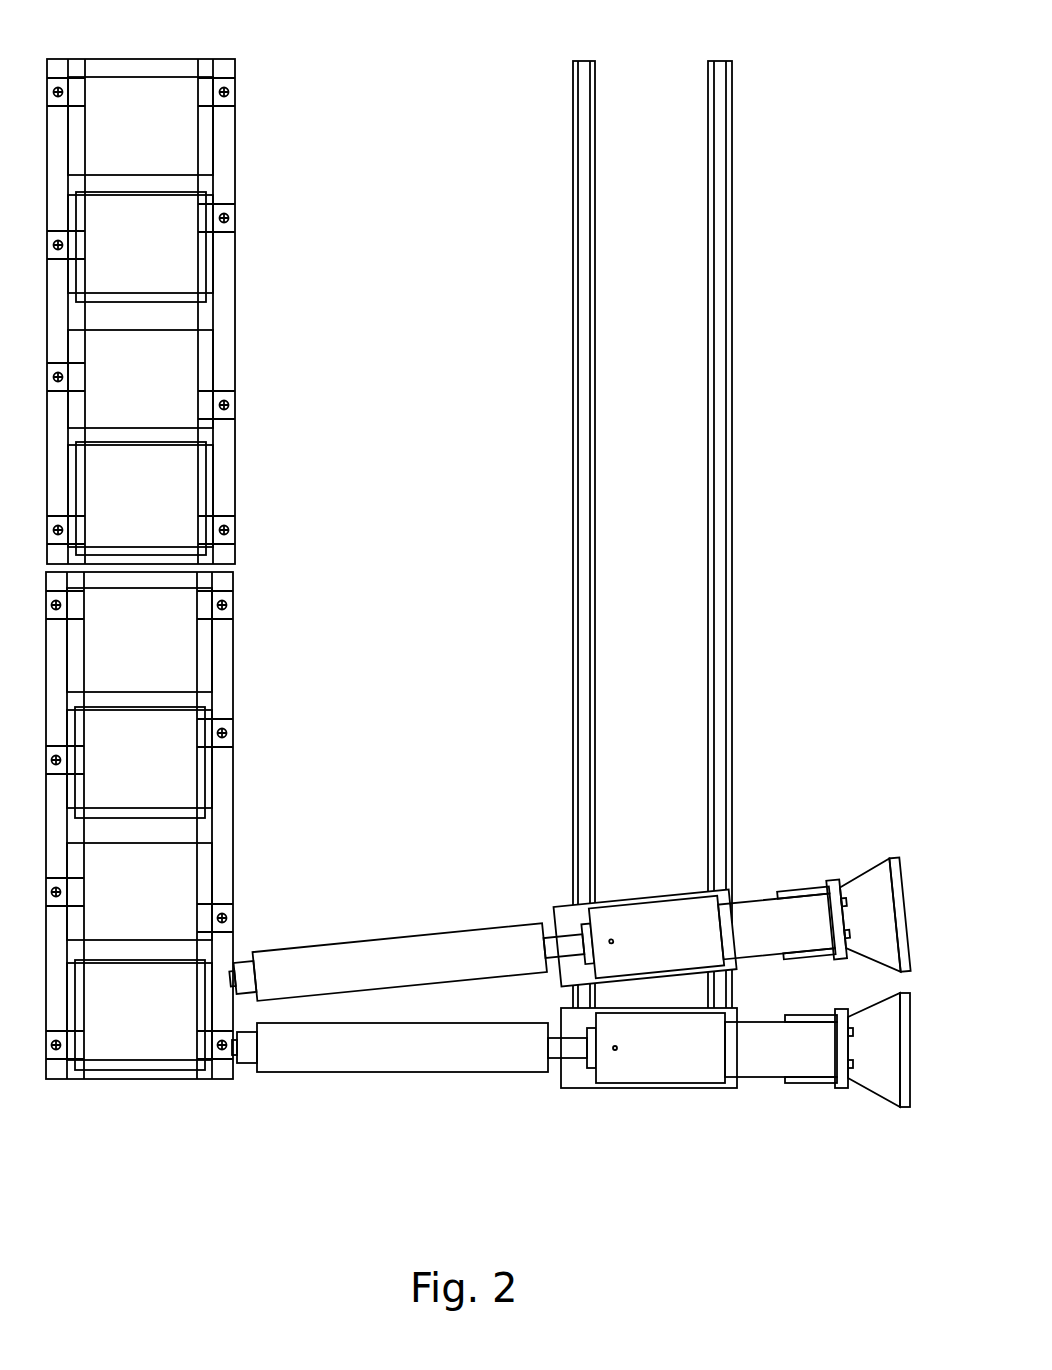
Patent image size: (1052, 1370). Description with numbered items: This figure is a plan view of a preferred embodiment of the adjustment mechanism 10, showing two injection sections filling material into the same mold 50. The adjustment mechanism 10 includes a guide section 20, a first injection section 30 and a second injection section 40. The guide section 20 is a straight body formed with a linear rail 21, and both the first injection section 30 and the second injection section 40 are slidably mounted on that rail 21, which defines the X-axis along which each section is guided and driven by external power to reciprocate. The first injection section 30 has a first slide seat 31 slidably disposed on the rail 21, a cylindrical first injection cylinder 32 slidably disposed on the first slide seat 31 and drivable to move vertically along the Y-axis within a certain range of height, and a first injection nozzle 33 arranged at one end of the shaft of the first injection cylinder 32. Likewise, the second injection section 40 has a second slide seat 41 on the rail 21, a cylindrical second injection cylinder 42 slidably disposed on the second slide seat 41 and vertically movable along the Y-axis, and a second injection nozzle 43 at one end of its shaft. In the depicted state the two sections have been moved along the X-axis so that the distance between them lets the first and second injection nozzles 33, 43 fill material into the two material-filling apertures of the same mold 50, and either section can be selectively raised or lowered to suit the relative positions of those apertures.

The adjustment mechanism 10 is at (478, 656).
The guide section 20 is at (713, 571).
The rail 21 is at (713, 540).
The first injection section 30 is at (570, 837).
The first slide seat 31 is at (730, 893).
The first injection cylinder 32 is at (641, 920).
The first injection nozzle 33 is at (234, 967).
The second injection section 40 is at (571, 1093).
The second slide seat 41 is at (733, 1083).
The second injection cylinder 42 is at (672, 1065).
The second injection nozzle 43 is at (238, 1068).
The mold 50 is at (165, 1048).